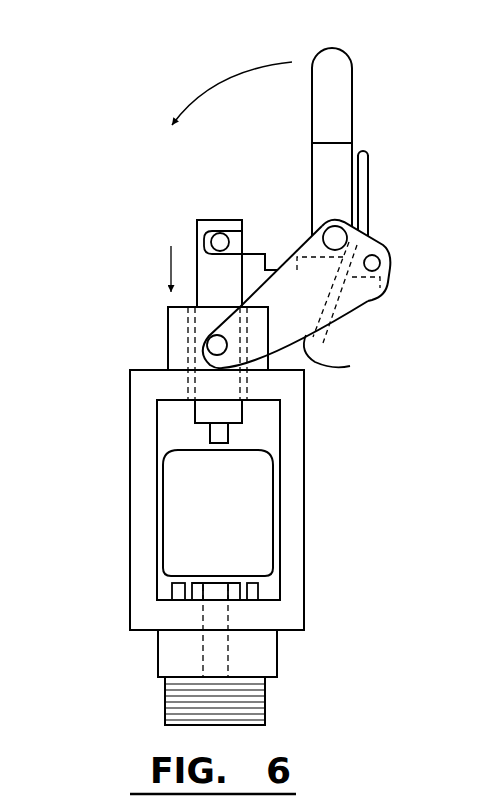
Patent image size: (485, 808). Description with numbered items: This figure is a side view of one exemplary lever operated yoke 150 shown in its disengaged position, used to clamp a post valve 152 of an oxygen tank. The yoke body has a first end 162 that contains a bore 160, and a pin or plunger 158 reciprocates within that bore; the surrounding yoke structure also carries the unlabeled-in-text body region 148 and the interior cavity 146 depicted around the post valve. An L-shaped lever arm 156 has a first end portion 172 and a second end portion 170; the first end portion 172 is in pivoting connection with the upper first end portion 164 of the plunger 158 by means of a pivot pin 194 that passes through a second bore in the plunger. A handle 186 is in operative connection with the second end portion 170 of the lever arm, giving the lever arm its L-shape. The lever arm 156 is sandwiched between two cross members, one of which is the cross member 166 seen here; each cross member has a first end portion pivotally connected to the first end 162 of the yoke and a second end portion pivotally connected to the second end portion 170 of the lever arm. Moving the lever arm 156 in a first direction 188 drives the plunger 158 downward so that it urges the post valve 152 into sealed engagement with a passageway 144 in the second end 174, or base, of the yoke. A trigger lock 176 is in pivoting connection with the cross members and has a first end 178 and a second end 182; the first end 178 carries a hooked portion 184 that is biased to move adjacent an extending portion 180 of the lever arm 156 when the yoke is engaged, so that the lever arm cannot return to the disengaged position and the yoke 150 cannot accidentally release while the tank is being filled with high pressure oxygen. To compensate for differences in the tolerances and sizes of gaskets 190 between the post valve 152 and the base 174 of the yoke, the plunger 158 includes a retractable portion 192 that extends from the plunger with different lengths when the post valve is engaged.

The passageway 144 is at (217, 610).
The switch chamber 146 is at (266, 417).
The housing 148 is at (130, 541).
The lever operated yoke 150 is at (116, 289).
The post valve 152 is at (242, 533).
The lever arm 156 is at (311, 150).
The plunger 158 is at (192, 413).
The bore 160 is at (190, 383).
The first end of the yoke body 162 is at (168, 340).
The first end portion of the plunger 164 is at (195, 228).
The cross member 166 is at (352, 304).
The second end portion of the lever arm 170 is at (316, 224).
The first end portion of the lever arm 172 is at (223, 229).
The second end of the yoke 174 is at (190, 611).
The trigger lock 176 is at (368, 195).
The first end of the trigger lock 178 is at (323, 343).
The extending portion of the lever arm 180 is at (297, 258).
The second end of the trigger lock 182 is at (368, 165).
The hooked portion 184 is at (308, 340).
The handle 186 is at (352, 60).
The first direction 188 is at (216, 85).
The gasket 190 is at (237, 585).
The retractable portion 192 is at (228, 436).
The pivot pin 194 is at (160, 228).